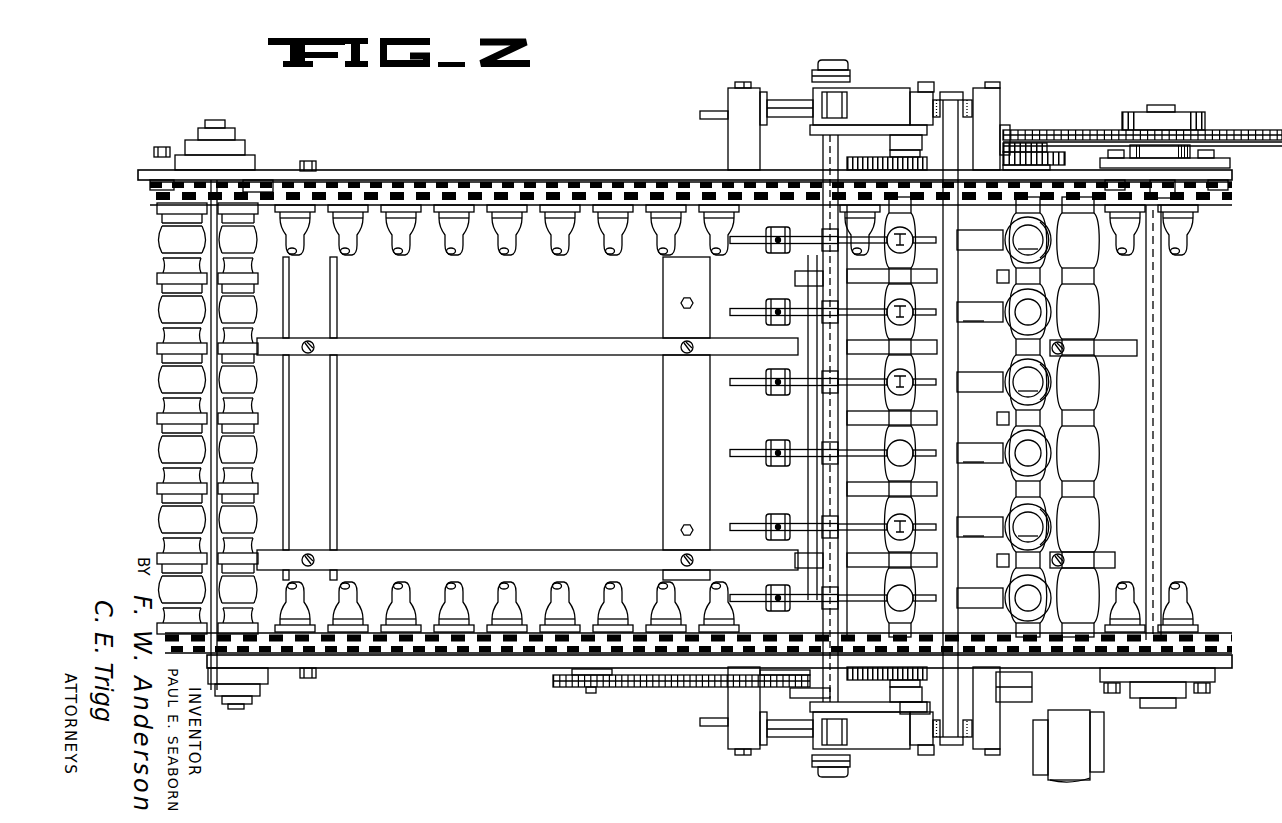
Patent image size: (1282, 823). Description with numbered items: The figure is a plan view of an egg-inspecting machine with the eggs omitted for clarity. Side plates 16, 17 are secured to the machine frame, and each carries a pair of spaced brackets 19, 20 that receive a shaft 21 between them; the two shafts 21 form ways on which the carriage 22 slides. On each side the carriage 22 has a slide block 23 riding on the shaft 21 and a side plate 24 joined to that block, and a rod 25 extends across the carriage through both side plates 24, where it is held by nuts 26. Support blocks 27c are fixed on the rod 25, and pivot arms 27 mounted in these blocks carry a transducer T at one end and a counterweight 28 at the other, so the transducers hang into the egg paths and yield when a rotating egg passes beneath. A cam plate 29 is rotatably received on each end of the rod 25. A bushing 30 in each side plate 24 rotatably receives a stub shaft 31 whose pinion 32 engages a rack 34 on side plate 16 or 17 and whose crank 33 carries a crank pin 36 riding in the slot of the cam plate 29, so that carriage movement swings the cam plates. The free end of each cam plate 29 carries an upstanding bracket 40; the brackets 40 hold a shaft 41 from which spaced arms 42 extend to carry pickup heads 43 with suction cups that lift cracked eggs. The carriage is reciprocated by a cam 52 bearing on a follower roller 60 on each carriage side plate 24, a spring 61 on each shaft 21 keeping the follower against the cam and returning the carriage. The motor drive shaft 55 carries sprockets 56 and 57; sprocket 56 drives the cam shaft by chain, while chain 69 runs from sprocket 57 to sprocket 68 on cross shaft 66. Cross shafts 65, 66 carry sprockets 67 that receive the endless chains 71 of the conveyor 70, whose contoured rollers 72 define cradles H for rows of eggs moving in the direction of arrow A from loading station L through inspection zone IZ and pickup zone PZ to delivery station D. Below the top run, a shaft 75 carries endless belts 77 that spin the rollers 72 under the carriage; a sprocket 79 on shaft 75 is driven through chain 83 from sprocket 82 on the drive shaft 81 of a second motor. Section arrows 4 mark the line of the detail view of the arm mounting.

The frame section 4 is at (757, 331).
The side plate 16 is at (336, 668).
The side plate 17 is at (348, 170).
The bracket 19 is at (708, 116).
The bracket 20 is at (1000, 92).
The shaft 21 is at (766, 95).
The carriage 22 is at (826, 60).
The slide block 23 is at (852, 88).
The side plate 24 is at (810, 130).
The rod 25 is at (823, 488).
The nut 26 is at (822, 102).
The arm 27 is at (730, 240).
The support block 27c is at (822, 400).
The counterweight 28 is at (768, 250).
The cam plate 29 is at (868, 90).
The bushing 30 is at (1012, 693).
The stub shaft 31 is at (898, 738).
The pinion 32 is at (1012, 683).
The crank 33 is at (900, 100).
The rack 34 is at (847, 163).
The crank pin 36 is at (926, 82).
The upstanding bracket 40 is at (950, 92).
The shaft 41 is at (972, 135).
The arm 42 is at (890, 455).
The pickup head 43 is at (914, 417).
The cam 52 is at (800, 694).
The drive shaft 55 is at (1030, 130).
The sprocket 56 is at (1055, 155).
The sprocket 57 is at (1035, 145).
The follower roller 60 is at (890, 706).
The spring 61 is at (985, 86).
The cross shaft 65 is at (205, 452).
The cross shaft 66 is at (1162, 433).
The sprocket 67 is at (222, 190).
The sprocket 68 is at (1205, 128).
The chain 69 is at (1272, 146).
The endless conveyor 70 is at (156, 489).
The endless chain 71 is at (432, 192).
The roller 72 is at (238, 298).
The shaft 75 is at (808, 497).
The endless belt 77 is at (795, 280).
The sprocket 79 is at (762, 674).
The drive shaft 81 is at (590, 694).
The sprocket 82 is at (578, 688).
The chain 83 is at (645, 688).